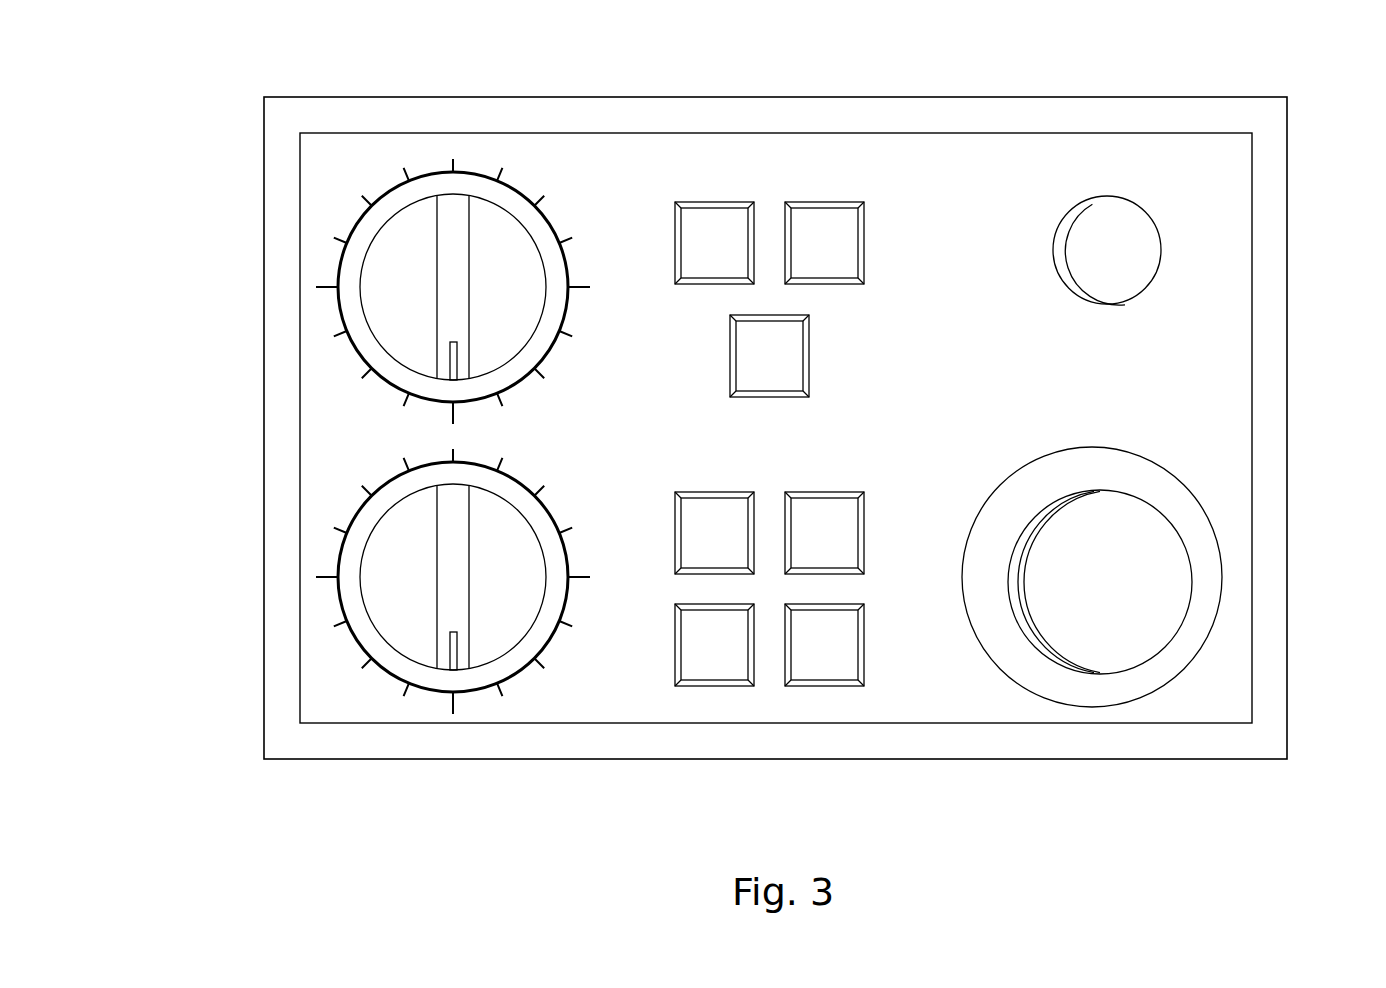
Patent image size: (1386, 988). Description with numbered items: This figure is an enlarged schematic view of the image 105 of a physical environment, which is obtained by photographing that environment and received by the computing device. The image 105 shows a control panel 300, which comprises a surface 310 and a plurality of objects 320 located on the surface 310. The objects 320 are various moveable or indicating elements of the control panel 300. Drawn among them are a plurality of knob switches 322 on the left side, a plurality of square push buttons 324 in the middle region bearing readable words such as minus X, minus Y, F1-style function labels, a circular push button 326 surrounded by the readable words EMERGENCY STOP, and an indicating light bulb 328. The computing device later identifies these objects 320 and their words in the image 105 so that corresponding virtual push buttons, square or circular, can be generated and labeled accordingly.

The image 105 is at (264, 282).
The control panel 300 is at (376, 112).
The surface 310 is at (1213, 301).
The objects 320 is at (150, 705).
The knob switches 322 is at (445, 330).
The square push buttons 324 is at (864, 247).
The circular push button 326 is at (1170, 590).
The indicating light bulb 328 is at (1127, 227).